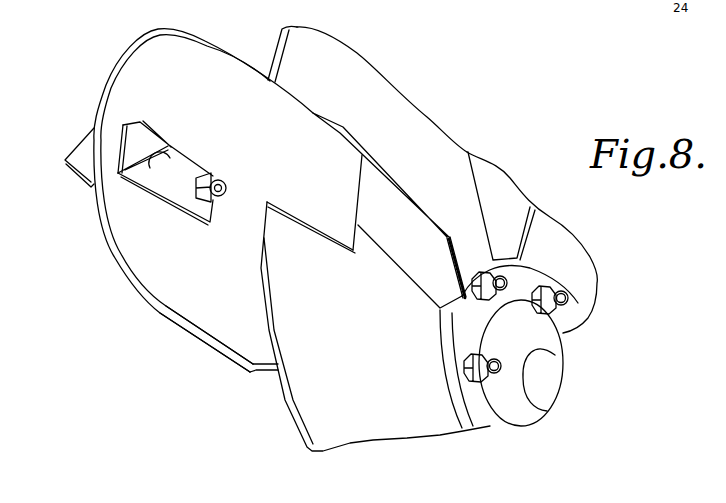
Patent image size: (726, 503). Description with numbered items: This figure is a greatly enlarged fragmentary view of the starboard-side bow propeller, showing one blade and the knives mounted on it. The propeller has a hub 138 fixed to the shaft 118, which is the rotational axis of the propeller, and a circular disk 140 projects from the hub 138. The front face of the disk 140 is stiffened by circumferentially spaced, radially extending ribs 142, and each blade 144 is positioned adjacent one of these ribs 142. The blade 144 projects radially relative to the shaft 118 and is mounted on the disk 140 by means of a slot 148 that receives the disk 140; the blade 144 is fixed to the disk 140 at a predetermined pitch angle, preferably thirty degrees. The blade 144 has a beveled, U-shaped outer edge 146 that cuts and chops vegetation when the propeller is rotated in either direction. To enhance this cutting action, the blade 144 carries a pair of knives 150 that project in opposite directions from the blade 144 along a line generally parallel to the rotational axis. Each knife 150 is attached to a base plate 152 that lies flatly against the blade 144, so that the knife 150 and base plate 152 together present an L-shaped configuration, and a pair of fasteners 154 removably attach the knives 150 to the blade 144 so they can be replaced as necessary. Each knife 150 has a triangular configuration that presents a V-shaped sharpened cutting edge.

The shaft 118 is at (543, 377).
The hub 138 is at (565, 328).
The circular disk 140 is at (395, 103).
The ribs 142 is at (487, 174).
The blade 144 is at (200, 36).
The beveled, U-shaped outer edge 146 is at (157, 310).
The slot 148 is at (322, 230).
The knives 150 is at (150, 134).
The base plate 152 is at (83, 164).
The fasteners 154 is at (162, 173).